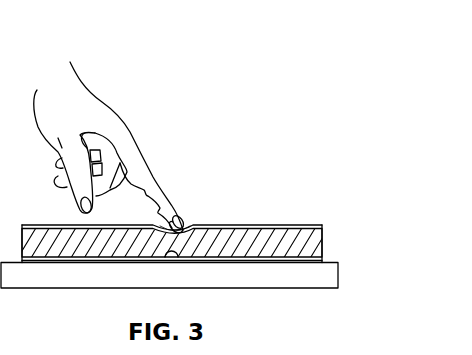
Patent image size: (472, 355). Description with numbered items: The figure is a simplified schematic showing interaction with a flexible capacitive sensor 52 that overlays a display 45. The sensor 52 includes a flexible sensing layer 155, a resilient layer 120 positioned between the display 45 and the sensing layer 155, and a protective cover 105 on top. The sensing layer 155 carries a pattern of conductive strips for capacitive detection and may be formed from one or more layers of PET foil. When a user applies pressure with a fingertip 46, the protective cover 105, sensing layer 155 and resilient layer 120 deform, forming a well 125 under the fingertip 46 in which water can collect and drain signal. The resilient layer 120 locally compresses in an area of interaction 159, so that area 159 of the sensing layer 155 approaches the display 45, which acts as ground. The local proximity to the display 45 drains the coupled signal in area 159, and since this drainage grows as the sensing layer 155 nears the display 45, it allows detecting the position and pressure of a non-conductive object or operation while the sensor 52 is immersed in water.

The display 45 is at (206, 288).
The fingertip 46 is at (163, 183).
The sensor 52 is at (275, 133).
The protective cover 105 is at (229, 224).
The resilient layer 120 is at (325, 262).
The well 125 is at (187, 221).
The flexible sensing layer 155 is at (323, 232).
The area of interaction 159 is at (166, 256).